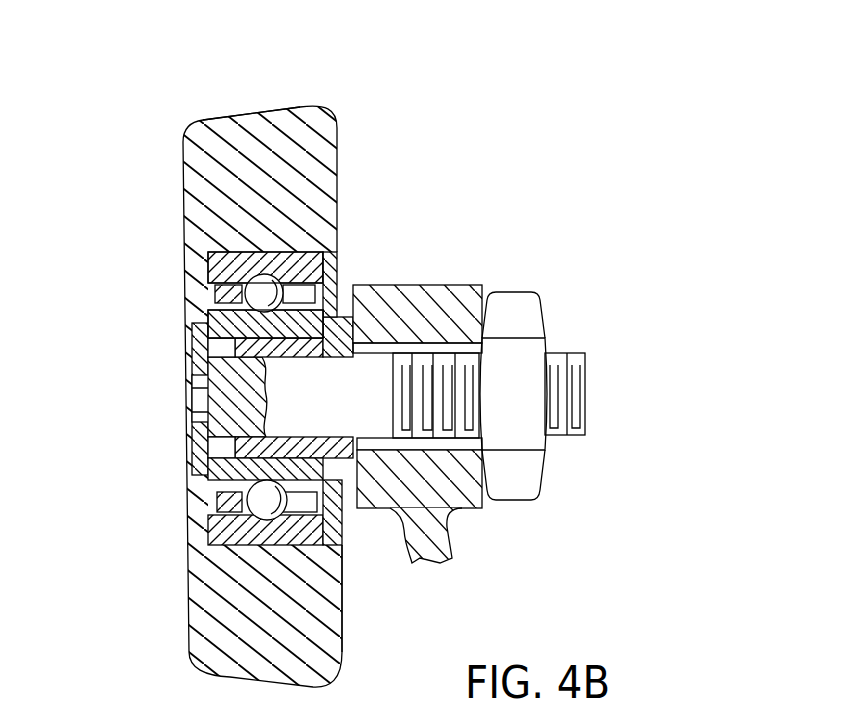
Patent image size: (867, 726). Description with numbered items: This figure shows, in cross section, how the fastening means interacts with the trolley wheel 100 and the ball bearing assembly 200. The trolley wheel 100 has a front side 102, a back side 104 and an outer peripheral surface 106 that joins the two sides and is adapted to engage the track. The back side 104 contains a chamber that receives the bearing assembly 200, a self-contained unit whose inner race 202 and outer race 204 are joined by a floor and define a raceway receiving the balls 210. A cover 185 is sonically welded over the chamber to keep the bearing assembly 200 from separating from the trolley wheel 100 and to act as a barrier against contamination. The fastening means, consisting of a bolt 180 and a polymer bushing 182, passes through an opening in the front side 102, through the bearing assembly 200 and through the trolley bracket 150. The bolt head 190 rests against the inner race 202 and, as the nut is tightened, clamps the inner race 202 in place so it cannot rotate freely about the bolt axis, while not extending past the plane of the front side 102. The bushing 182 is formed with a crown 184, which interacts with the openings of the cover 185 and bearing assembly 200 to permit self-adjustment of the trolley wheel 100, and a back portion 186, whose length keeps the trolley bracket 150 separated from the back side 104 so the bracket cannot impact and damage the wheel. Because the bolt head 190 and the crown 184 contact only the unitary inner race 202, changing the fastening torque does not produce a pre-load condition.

The trolley wheel 100 is at (365, 137).
The front side 102 is at (188, 583).
The back side 104 is at (346, 657).
The outer peripheral surface 106 is at (251, 115).
The trolley bracket 150 is at (477, 533).
The bolt 180 is at (602, 396).
The bushing 182 is at (292, 338).
The crown 184 is at (208, 452).
The cover 185 is at (338, 277).
The back portion 186 is at (346, 478).
The bolt head 190 is at (190, 352).
The bearing assembly 200 is at (291, 257).
The inner race 202 is at (190, 335).
The outer race 204 is at (212, 262).
The balls 210 is at (189, 288).